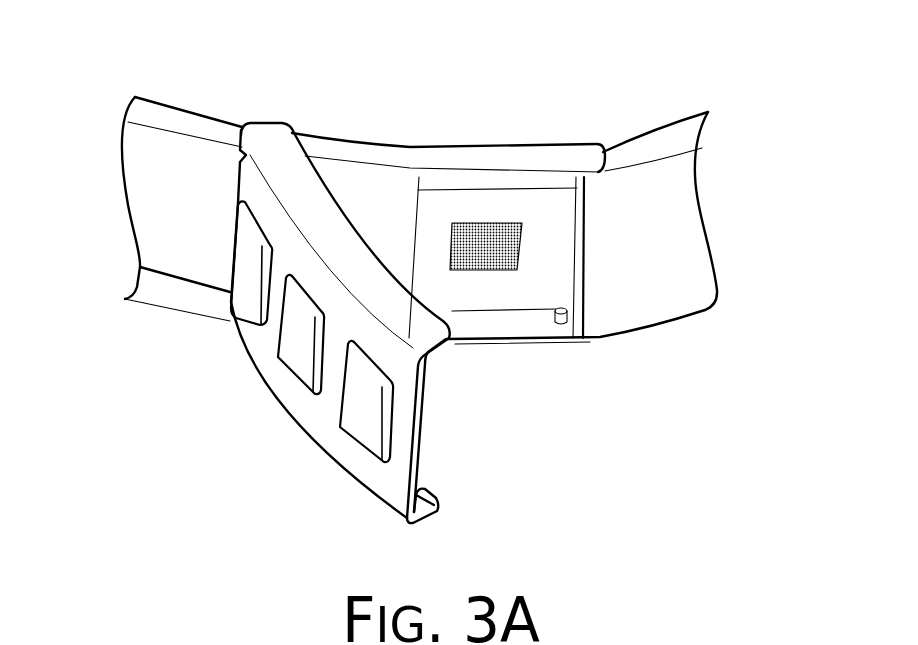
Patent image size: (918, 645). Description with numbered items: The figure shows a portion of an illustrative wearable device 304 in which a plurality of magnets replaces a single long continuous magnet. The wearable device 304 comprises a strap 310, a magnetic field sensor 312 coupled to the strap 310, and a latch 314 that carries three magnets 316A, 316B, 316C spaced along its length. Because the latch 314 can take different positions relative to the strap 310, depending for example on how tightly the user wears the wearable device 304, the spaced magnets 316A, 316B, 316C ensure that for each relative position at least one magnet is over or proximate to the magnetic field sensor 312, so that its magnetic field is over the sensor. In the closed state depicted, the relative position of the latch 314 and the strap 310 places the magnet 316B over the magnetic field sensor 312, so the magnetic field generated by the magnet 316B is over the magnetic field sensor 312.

The wearable device 304 is at (728, 62).
The strap 310 is at (697, 308).
The magnetic field sensor 312 is at (486, 228).
The latch 314 is at (420, 447).
The magnet 316A is at (248, 302).
The magnet 316B is at (291, 373).
The magnet 316C is at (353, 436).